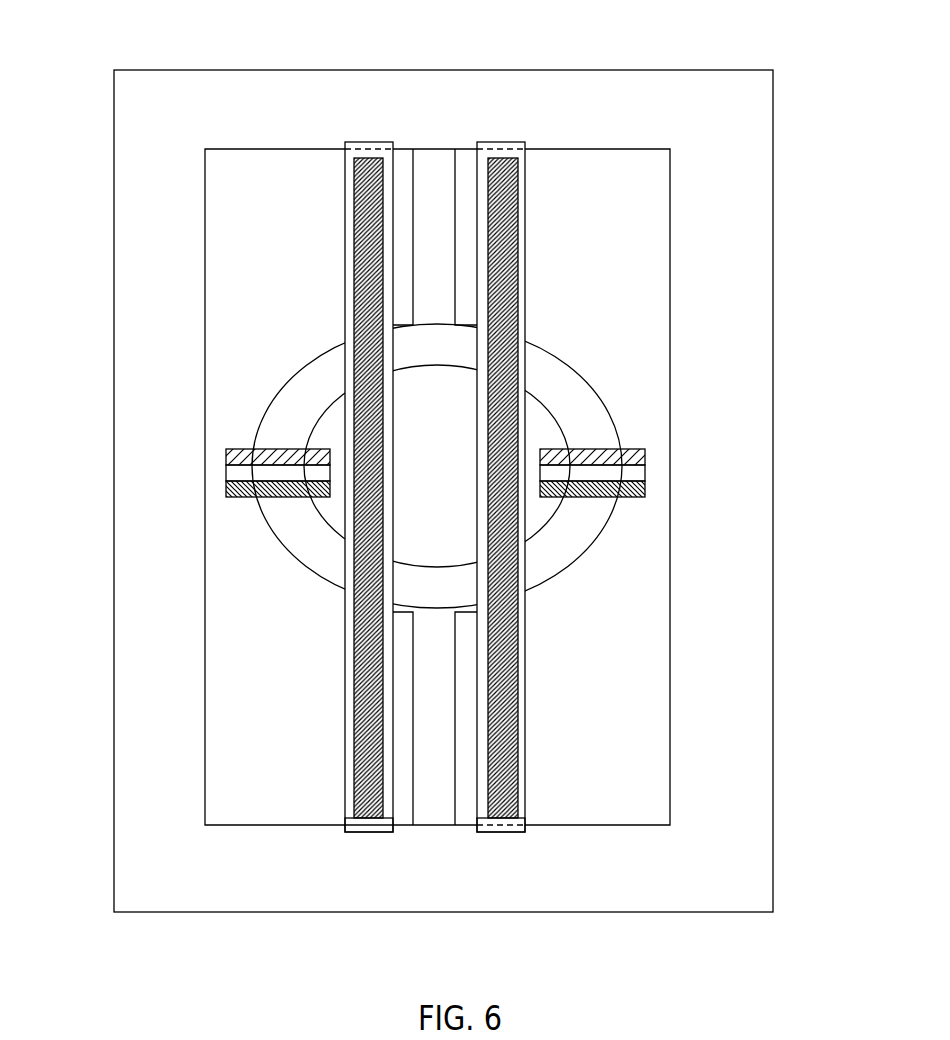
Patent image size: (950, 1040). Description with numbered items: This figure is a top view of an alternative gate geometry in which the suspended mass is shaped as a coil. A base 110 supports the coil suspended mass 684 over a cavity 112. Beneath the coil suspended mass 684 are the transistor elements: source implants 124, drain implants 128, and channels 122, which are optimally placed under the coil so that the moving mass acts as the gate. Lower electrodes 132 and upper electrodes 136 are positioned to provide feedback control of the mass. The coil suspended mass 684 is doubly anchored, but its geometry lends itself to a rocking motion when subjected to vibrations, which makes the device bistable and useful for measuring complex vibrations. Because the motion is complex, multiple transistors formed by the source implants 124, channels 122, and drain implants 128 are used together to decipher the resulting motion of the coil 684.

The base 110 is at (135, 199).
The cavity 112 is at (247, 260).
The channels 122 is at (226, 475).
The source implants 124 is at (226, 460).
The drain implants 128 is at (223, 487).
The lower electrodes 132 is at (503, 192).
The upper electrodes 136 is at (477, 833).
The coil suspended mass 684 is at (568, 540).